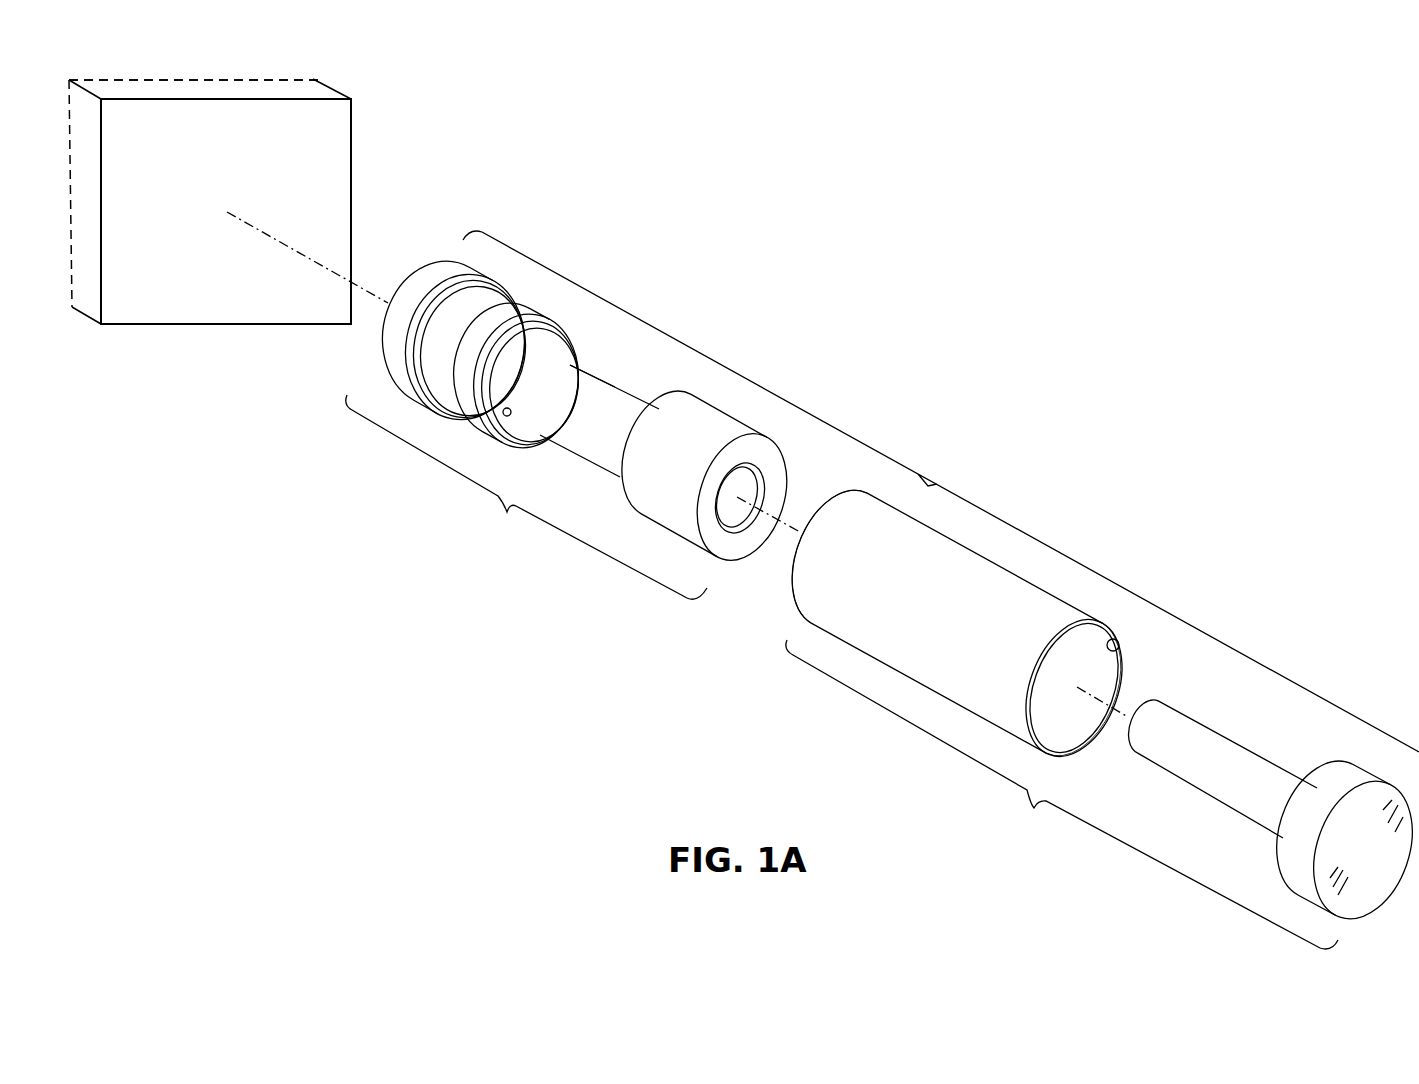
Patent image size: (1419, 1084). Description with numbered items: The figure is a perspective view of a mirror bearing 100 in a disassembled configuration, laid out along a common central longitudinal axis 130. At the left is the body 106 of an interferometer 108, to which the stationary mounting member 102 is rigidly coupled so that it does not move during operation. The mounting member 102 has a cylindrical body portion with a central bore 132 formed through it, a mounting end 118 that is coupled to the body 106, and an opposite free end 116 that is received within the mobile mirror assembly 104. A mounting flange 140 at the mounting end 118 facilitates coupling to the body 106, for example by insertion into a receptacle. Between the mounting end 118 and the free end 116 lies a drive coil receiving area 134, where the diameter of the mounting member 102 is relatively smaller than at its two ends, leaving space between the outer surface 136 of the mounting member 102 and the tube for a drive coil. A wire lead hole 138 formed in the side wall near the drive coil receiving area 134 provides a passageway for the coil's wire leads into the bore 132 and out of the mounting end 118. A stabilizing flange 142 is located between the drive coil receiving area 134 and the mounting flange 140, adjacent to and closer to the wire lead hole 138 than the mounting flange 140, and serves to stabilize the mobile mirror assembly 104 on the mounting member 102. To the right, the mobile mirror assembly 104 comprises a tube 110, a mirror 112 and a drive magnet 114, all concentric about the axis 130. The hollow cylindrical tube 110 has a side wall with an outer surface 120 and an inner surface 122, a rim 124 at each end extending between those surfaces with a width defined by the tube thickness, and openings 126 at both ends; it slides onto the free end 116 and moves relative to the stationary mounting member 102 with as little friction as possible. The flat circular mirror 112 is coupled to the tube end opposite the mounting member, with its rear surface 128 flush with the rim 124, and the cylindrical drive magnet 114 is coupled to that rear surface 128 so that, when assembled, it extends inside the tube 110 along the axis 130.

The mirror bearing 100 is at (941, 491).
The mounting member 102 is at (526, 497).
The mobile mirror assembly 104 is at (1062, 794).
The body 106 is at (328, 143).
The interferometer 108 is at (342, 84).
The tube 110 is at (992, 575).
The mirror 112 is at (1367, 777).
The drive magnet 114 is at (1220, 755).
The free end 116 is at (723, 427).
The mounting end 118 is at (423, 277).
The outer surface 120 is at (1075, 602).
The inner surface 122 is at (1127, 653).
The rim 124 is at (1110, 623).
The openings 126 is at (1063, 727).
The rear surface 128 is at (1327, 775).
The central longitudinal axis 130 is at (1117, 703).
The central bore 132 is at (728, 513).
The drive coil receiving area 134 is at (620, 402).
The outer surface 136 is at (602, 372).
The wire lead hole 138 is at (503, 415).
The mounting flange 140 is at (465, 270).
The stabilizing flange 142 is at (522, 317).